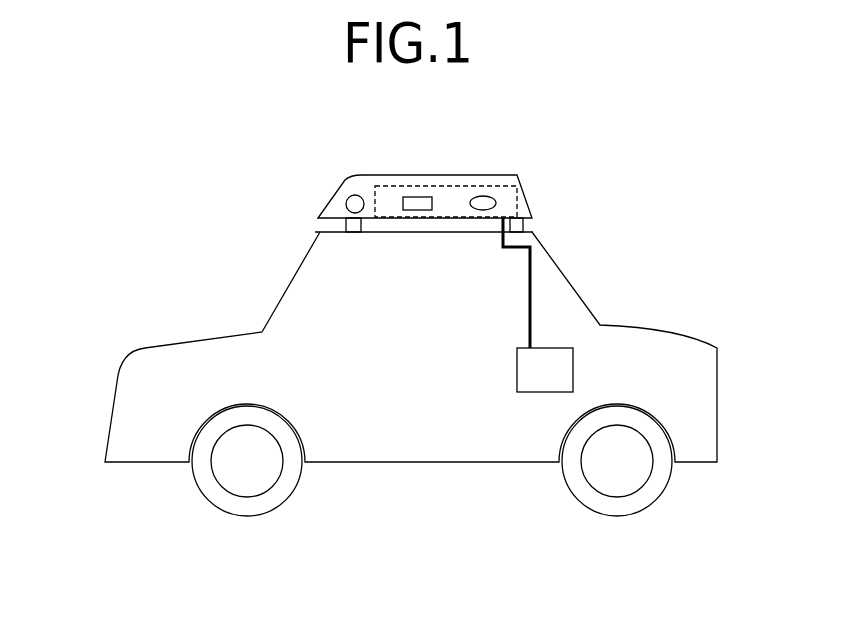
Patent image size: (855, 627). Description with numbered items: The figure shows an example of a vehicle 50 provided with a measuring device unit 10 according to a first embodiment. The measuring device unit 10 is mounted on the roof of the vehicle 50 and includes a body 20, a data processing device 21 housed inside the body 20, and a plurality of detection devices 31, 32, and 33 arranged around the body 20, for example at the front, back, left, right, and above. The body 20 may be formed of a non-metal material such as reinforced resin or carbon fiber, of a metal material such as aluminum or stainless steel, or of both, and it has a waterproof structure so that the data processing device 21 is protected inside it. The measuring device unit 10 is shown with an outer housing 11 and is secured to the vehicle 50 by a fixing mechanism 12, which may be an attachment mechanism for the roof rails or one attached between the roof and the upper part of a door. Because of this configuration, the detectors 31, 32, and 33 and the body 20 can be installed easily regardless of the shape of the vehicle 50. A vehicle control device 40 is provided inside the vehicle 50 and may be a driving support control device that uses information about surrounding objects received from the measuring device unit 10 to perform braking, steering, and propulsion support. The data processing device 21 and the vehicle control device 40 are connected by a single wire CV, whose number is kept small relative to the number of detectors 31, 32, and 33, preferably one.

The measuring device unit 10 is at (439, 178).
The housing 11 is at (383, 175).
The fixing mechanism 12 is at (357, 232).
The body 20 is at (460, 176).
The data processing device 21 is at (462, 178).
The detection device 31 is at (349, 197).
The detection device 32 is at (417, 206).
The detection device 33 is at (491, 203).
The vehicle control device 40 is at (530, 392).
The wire CV is at (530, 318).
The vehicle 50 is at (172, 341).